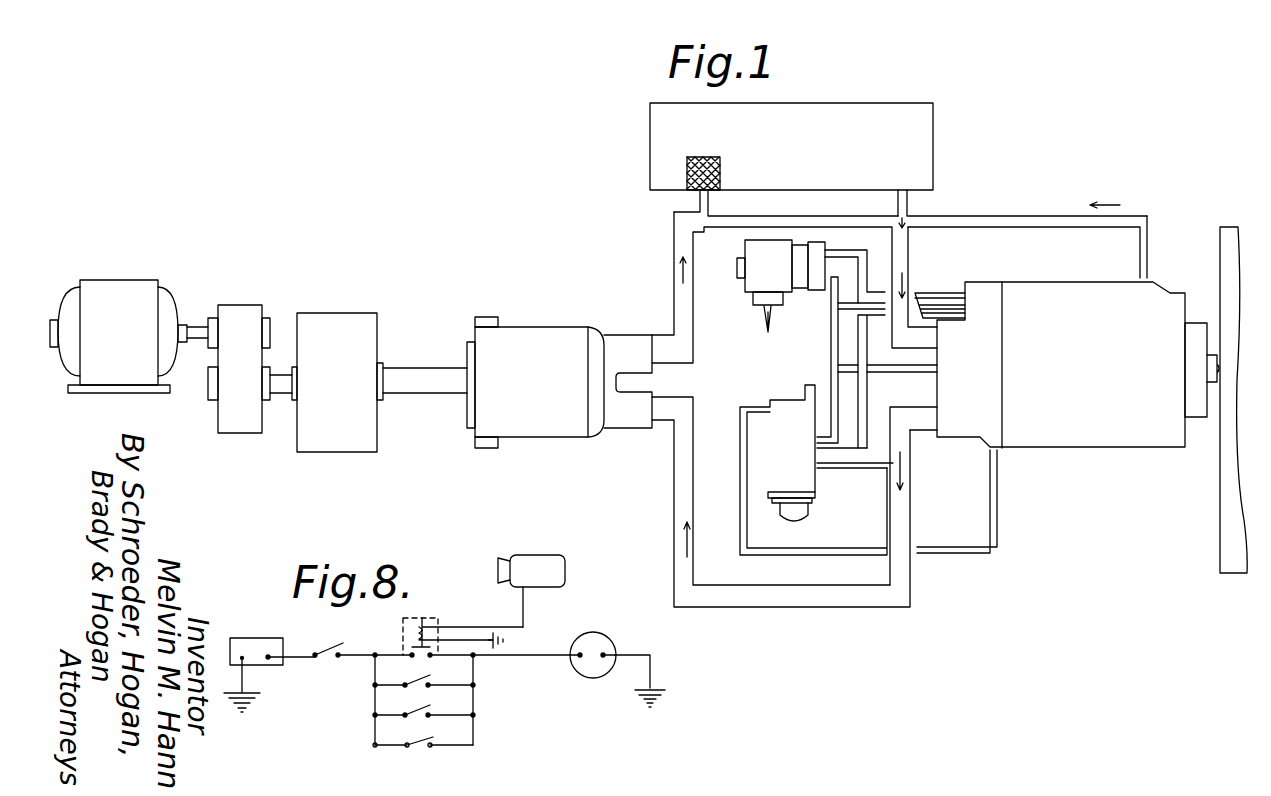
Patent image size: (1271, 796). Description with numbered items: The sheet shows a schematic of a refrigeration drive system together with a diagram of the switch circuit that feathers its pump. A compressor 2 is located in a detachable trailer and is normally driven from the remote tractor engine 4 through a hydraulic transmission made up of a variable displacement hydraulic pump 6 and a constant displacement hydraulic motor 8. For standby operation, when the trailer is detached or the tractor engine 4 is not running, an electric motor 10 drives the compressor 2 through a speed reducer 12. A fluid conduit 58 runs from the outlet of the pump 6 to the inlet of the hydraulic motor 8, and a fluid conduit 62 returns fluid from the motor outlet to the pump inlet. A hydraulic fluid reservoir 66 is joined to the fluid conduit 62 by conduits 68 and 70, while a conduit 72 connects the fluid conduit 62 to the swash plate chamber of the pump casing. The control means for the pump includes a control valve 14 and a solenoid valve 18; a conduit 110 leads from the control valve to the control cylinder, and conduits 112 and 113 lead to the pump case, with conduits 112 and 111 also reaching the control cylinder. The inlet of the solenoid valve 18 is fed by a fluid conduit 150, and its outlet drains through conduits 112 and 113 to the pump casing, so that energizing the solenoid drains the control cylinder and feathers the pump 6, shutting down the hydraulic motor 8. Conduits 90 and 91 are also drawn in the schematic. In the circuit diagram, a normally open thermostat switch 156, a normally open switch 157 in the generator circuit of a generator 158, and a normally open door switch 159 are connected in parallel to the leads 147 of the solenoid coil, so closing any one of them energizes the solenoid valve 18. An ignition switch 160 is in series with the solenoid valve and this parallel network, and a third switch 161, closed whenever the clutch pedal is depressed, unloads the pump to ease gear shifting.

In FIG. 1, the compressor 2 is at (358, 313).
In FIG. 1, the tractor engine 4 is at (1220, 229).
In FIG. 1, the variable displacement hydraulic pump 6 is at (1088, 447).
In FIG. 1, the constant displacement hydraulic motor 8 is at (548, 432).
In FIG. 1, the electric motor 10 is at (70, 290).
In FIG. 1, the speed reducer 12 is at (247, 306).
In FIG. 1, the control valve 14 is at (815, 485).
In FIG. 1, the solenoid valve 18 is at (753, 281).
In FIG. 8, the solenoid valve 18 is at (593, 676).
In FIG. 1, the fluid conduit 58 is at (883, 603).
In FIG. 1, the fluid conduit 62 is at (673, 260).
In FIG. 1, the hydraulic fluid reservoir 66 is at (923, 157).
In FIG. 1, the conduit 68 is at (708, 204).
In FIG. 1, the conduit 70 is at (907, 200).
In FIG. 1, the conduit 72 is at (1000, 214).
In FIG. 1, the drain line 90 is at (963, 555).
In FIG. 1, the passage 91 is at (870, 470).
In FIG. 1, the conduit 110 is at (870, 403).
In FIG. 1, the conduit 111 is at (843, 306).
In FIG. 1, the conduit 112 is at (832, 345).
In FIG. 1, the conduit 113 is at (904, 372).
In FIG. 1, the leads 147 is at (766, 320).
In FIG. 8, the leads 147 is at (530, 657).
In FIG. 1, the fluid conduit 150 is at (858, 245).
In FIG. 8, the thermostat switch 156 is at (424, 704).
In FIG. 8, the switch 157 is at (440, 617).
In FIG. 8, the generator 158 is at (524, 556).
In FIG. 8, the switch 159 is at (424, 673).
In FIG. 8, the ignition switch 160 is at (328, 649).
In FIG. 8, the third switch 161 is at (422, 750).